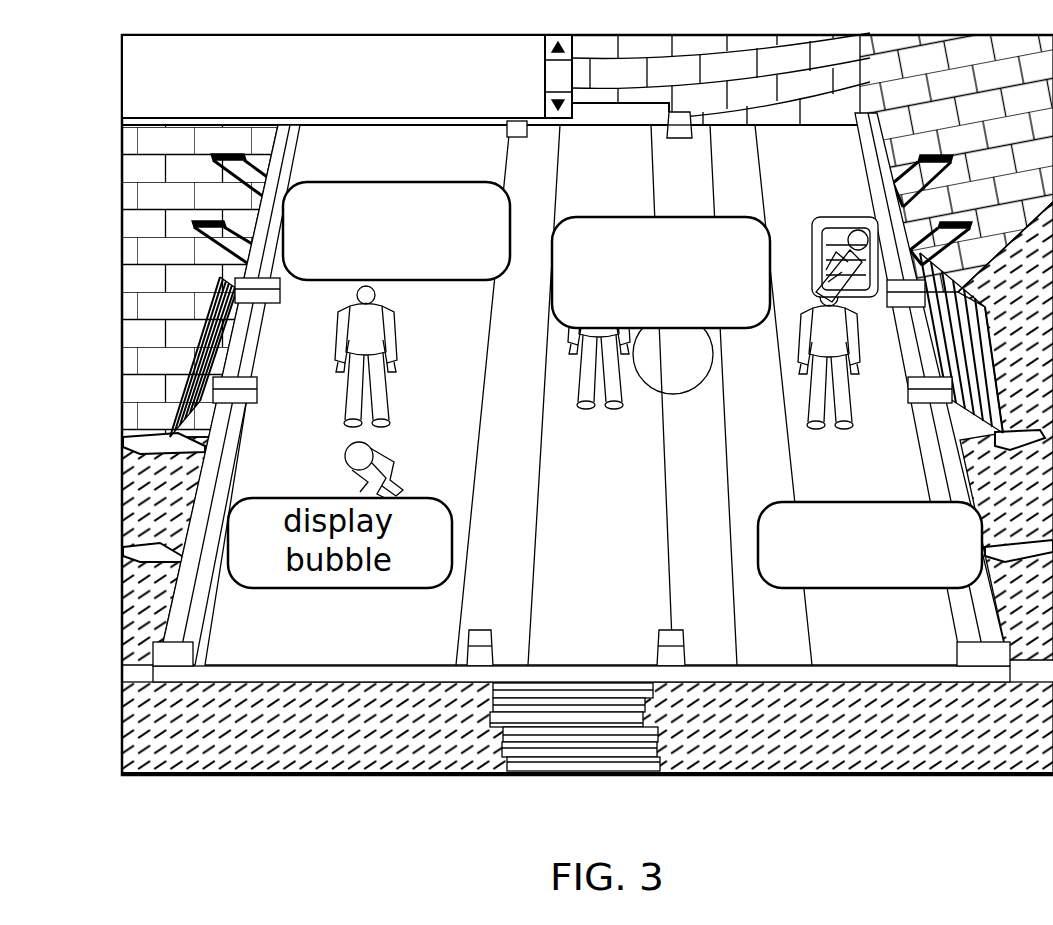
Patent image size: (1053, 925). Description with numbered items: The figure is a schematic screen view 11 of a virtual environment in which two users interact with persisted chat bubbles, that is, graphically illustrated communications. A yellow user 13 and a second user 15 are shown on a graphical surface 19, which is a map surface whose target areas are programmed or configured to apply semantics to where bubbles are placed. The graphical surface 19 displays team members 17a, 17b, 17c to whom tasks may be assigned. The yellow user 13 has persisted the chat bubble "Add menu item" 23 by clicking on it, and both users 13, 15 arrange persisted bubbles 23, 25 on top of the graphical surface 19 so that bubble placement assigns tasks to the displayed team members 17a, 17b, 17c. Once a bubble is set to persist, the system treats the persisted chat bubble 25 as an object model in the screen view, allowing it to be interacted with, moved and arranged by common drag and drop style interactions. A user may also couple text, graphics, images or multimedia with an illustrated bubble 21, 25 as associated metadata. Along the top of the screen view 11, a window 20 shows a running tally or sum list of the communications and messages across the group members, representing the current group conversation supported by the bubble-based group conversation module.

The screen view 11 is at (946, 21).
The yellow user 13 is at (847, 232).
The user 15 is at (345, 456).
The team member 17a is at (336, 348).
The team member 17b is at (590, 416).
The team member 17c is at (802, 414).
The graphical surface 19 is at (638, 184).
The window 20 is at (428, 121).
The illustrated bubble 21 is at (776, 500).
The chat bubble "Add menu item" 23 is at (377, 182).
The persisted chat bubble 25 is at (772, 236).